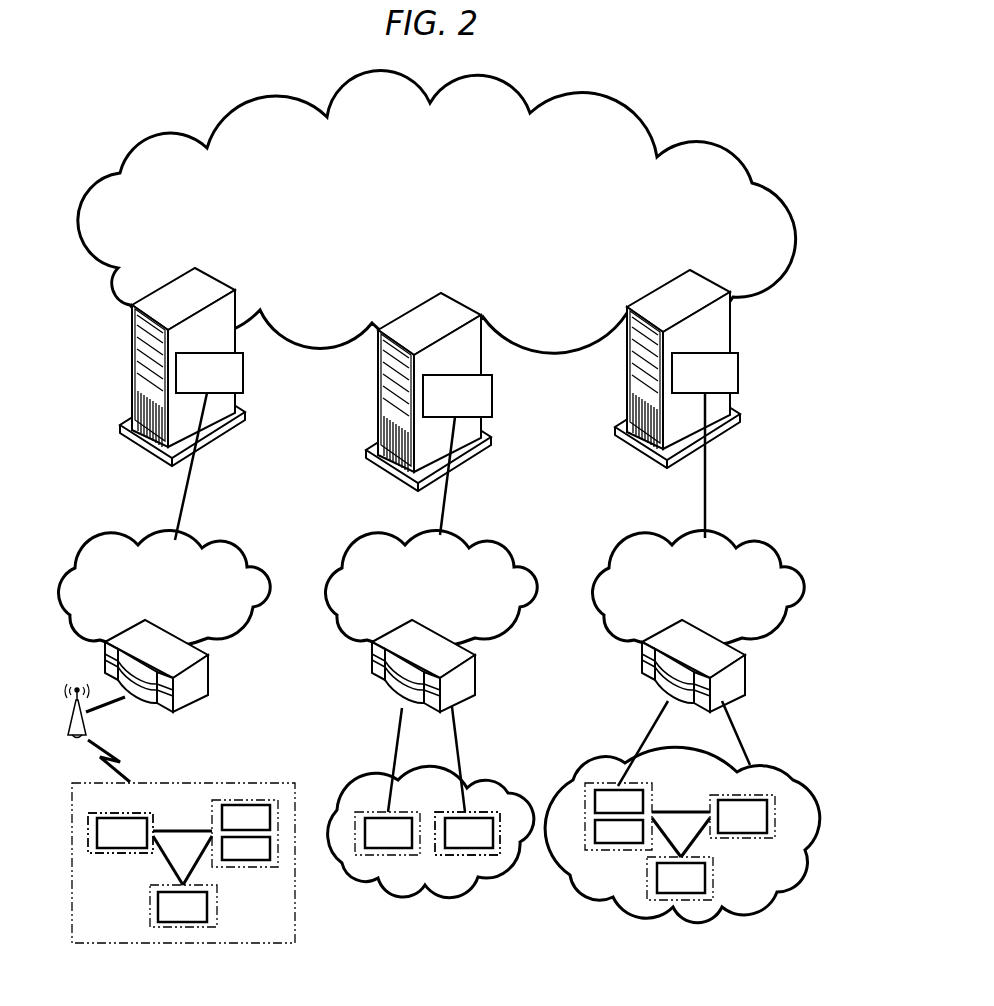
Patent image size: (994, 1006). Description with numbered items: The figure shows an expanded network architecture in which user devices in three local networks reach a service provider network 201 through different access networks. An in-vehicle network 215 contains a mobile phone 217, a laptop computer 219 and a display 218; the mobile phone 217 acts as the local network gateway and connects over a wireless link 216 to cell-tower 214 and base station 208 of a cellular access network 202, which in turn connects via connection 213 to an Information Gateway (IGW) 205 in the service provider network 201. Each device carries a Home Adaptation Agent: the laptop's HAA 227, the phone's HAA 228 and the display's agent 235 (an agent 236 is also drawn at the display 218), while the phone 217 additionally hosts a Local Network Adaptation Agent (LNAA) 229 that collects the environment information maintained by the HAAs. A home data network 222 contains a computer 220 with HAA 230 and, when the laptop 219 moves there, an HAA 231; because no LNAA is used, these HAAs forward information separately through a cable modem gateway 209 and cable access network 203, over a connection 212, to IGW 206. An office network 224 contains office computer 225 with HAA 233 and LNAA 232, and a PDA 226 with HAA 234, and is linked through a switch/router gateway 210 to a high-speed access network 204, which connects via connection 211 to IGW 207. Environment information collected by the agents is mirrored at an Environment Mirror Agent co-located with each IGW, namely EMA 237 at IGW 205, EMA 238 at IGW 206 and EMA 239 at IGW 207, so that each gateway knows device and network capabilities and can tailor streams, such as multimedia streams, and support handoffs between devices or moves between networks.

The service provider network 201 is at (625, 100).
The cellular access network 202 is at (100, 533).
The cable access network 203 is at (360, 535).
The access network 204 is at (765, 541).
The information gateway (IGW) 205 is at (132, 351).
The information gateway (IGW) 206 is at (378, 394).
The information gateway (IGW) 207 is at (627, 390).
The base station 208 is at (209, 676).
The gateway (cable modem) 209 is at (476, 676).
The gateway (network switch/router) 210 is at (746, 676).
The connection 211 is at (706, 470).
The communication link 212 is at (446, 505).
The connection 213 is at (189, 484).
The cell-tower 214 is at (88, 722).
The in-vehicle network 215 is at (285, 944).
The wireless link 216 is at (100, 763).
The mobile phone 217 is at (249, 835).
The display 218 is at (178, 932).
The laptop computer 219 is at (88, 820).
The computer 220 is at (362, 834).
The home network 222 is at (393, 900).
The office network 224 is at (590, 900).
The office computer 225 is at (591, 815).
The personal digital assistant (PDA) 226 is at (687, 902).
The home adaptation agent (HAA) 227 is at (97, 842).
The home adaptation agent (HAA) 228 is at (262, 860).
The local network adaptation agent (LNAA) 229 is at (262, 805).
The home adaptation agent (HAA) 230 is at (368, 849).
The home adaptation agent (HAA) 231 is at (490, 855).
The local network adaptation agent (LNAA) 232 is at (650, 765).
The home adaptation agent (HAA) 233 is at (595, 843).
The home adaptation agent (HAA) 234 is at (656, 900).
The home adaptation agent (HAA) 235 is at (768, 885).
The HAA 236 is at (158, 916).
The environment mirror agent (EMA) 237 is at (243, 378).
The environment mirror agent (EMA) 238 is at (492, 400).
The environment mirror agent (EMA) 239 is at (738, 378).